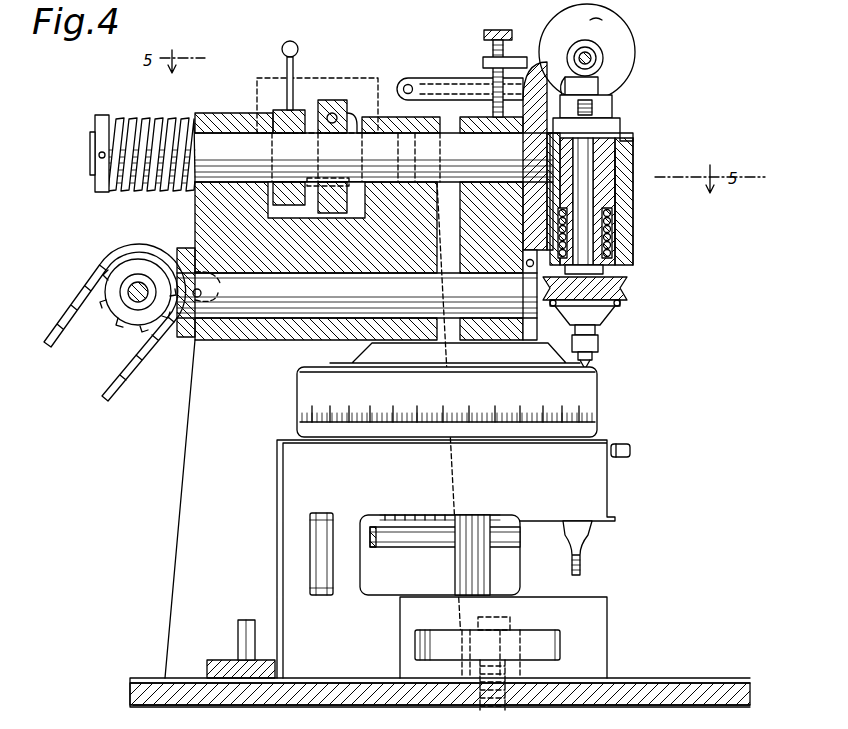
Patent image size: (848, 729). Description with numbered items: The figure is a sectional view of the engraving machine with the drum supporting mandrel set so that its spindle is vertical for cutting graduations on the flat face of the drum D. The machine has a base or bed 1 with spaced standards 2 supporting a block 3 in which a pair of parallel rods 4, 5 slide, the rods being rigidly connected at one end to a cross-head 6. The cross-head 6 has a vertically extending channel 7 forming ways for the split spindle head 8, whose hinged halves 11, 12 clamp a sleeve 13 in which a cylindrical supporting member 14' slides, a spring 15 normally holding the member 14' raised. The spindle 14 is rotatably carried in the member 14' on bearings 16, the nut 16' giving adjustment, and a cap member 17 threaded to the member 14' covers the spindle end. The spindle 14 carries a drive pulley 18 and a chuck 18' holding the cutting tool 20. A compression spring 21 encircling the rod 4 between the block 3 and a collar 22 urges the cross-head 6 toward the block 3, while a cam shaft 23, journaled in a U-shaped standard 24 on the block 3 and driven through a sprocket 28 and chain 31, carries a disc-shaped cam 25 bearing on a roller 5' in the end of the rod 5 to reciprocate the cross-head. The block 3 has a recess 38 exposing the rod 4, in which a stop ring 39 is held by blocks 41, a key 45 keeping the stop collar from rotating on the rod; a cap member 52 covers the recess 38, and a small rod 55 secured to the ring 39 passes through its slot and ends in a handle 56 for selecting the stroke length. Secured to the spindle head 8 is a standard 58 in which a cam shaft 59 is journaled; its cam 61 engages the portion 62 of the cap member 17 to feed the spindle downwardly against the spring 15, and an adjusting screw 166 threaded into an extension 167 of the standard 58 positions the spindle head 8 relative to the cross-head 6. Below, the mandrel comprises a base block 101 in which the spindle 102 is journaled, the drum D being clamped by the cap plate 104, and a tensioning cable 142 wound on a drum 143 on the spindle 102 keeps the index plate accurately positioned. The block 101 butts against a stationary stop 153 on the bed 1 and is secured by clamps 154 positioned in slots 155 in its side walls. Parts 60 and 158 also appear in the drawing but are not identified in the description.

The base or bed 1 is at (662, 698).
The spaced standards 2 is at (190, 522).
The block 3 is at (238, 112).
The rod 4 is at (92, 150).
The rod 5 is at (357, 297).
The roller 5' is at (226, 287).
The cross-head 6 is at (474, 116).
The vertically extending channel 7 is at (537, 322).
The split spindle head 8 is at (636, 190).
The hinged half of spindle head 11 is at (545, 150).
The hinged half of spindle head 12 is at (633, 152).
The sleeve 13 is at (628, 190).
The spindle 14 is at (610, 233).
The cylindrical supporting member 14' is at (646, 130).
The spring 15 is at (610, 215).
The bearings 16 is at (610, 196).
The nut 16' is at (609, 118).
The cap member 17 is at (612, 108).
The drive pulley 18 is at (609, 293).
The chuck 18' is at (610, 342).
The cutting tool 20 is at (592, 367).
The compression spring 21 is at (146, 124).
The collar 22 is at (100, 194).
The cam shaft 23 is at (140, 290).
The U-shaped standard 24 is at (186, 342).
The disc-shaped cam 25 is at (130, 318).
The sprocket 28 is at (131, 322).
The chain 31 is at (68, 312).
The recess 38 is at (362, 115).
The stop ring 39 is at (297, 110).
The blocks 41 is at (332, 100).
The key 45 is at (330, 180).
The cap member 52 is at (267, 78).
The small rod 55 is at (280, 95).
The handle 56 is at (284, 44).
The standard 58 is at (532, 62).
The cam shaft 59 is at (592, 46).
The wheel axle 60 is at (596, 20).
The cam 61 is at (604, 60).
The projecting end of cap member 62 is at (568, 74).
The base block 101 is at (608, 491).
The spindle 102 is at (492, 579).
The cap plate 104 is at (378, 351).
The tensioning cable 142 is at (522, 535).
The drum 143 is at (508, 552).
The stationary stop 153 is at (215, 660).
The clamps 154 is at (523, 695).
The slots 155 is at (548, 640).
The cylinder 158 is at (336, 529).
The adjusting screw 166 is at (498, 30).
The extension 167 is at (485, 62).
The drum D is at (604, 400).